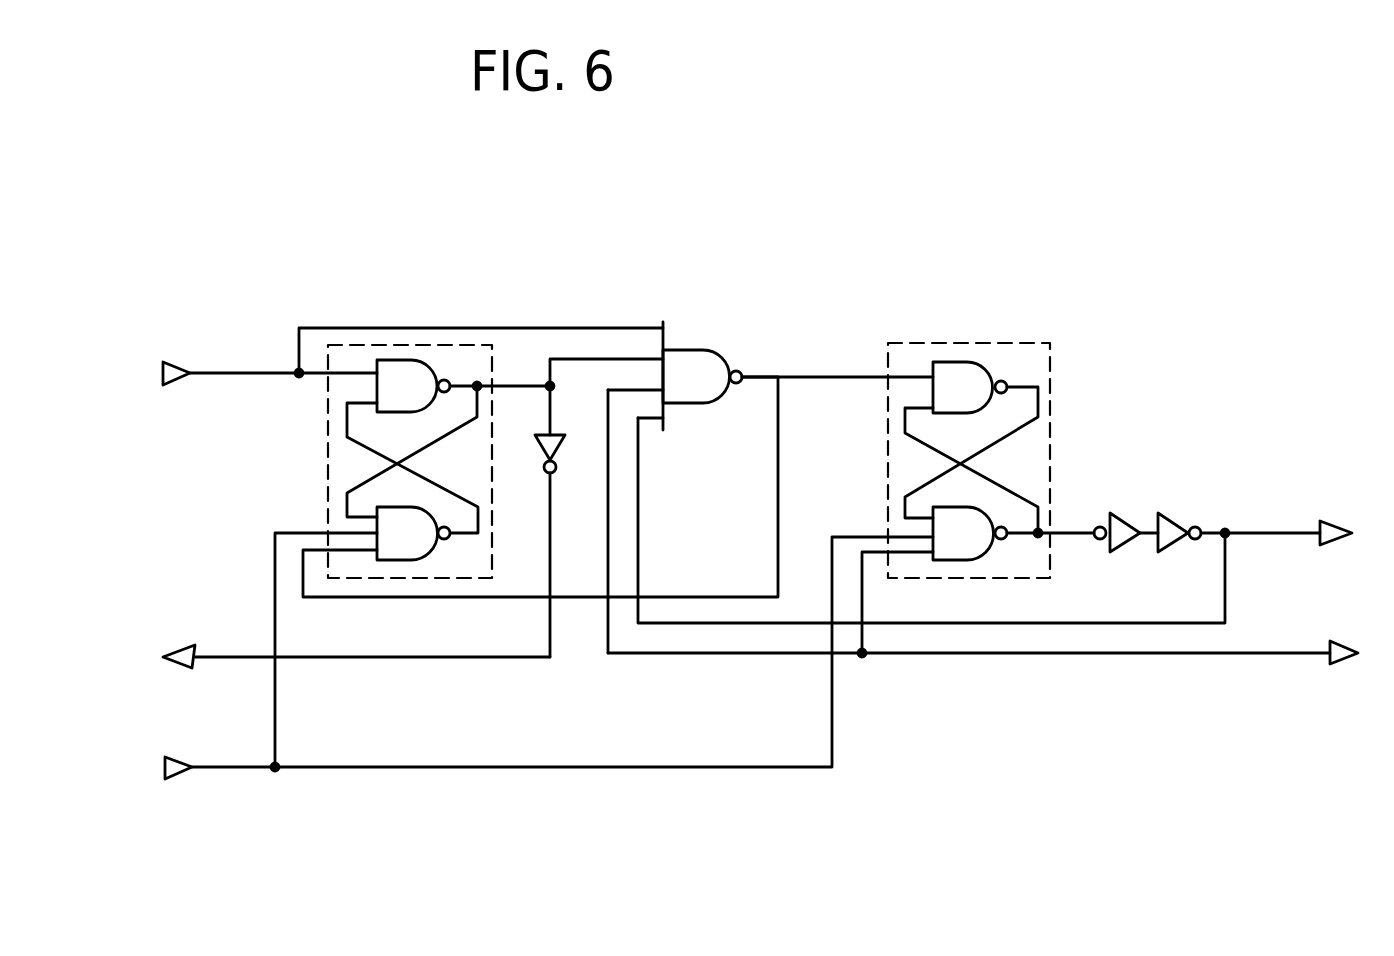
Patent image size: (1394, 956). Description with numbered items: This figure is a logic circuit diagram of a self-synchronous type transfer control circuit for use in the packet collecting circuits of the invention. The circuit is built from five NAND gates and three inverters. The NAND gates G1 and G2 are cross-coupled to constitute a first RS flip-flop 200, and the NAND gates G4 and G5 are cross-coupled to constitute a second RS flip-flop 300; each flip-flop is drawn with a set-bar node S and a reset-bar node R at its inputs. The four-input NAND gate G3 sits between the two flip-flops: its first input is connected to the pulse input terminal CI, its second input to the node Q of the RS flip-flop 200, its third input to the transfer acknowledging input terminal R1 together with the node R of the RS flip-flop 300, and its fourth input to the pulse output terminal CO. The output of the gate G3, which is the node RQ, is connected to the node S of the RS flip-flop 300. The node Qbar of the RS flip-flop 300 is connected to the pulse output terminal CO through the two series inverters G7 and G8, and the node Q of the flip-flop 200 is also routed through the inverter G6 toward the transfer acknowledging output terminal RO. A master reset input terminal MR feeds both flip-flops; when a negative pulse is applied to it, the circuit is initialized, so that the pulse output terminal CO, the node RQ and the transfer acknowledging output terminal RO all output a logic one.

The NAND gate G1 is at (405, 360).
The NAND gate G2 is at (437, 552).
The 4-input NAND gate G3 is at (700, 350).
The NAND gate G4 is at (955, 362).
The NAND gate G5 is at (958, 562).
The inverter G6 is at (558, 458).
The inverter G7 is at (1118, 520).
The inverter G8 is at (1175, 520).
The RS flip-flop 200 is at (465, 343).
The RS flip-flop 300 is at (985, 340).
The pulse input terminal CI is at (175, 387).
The transfer acknowledging output terminal RO is at (175, 667).
The master reset input terminal MR is at (173, 780).
The pulse output terminal CO is at (1320, 545).
The transfer acknowledging input terminal R1 is at (1343, 662).
The node Q of the RS flip-flop 200 Q is at (516, 358).
The node Q-bar of the RS flip-flop 300 Qbar is at (1079, 579).
The node S-bar S is at (585, 418).
The node R-bar R is at (608, 644).
The node RQ-bar RQ is at (812, 302).